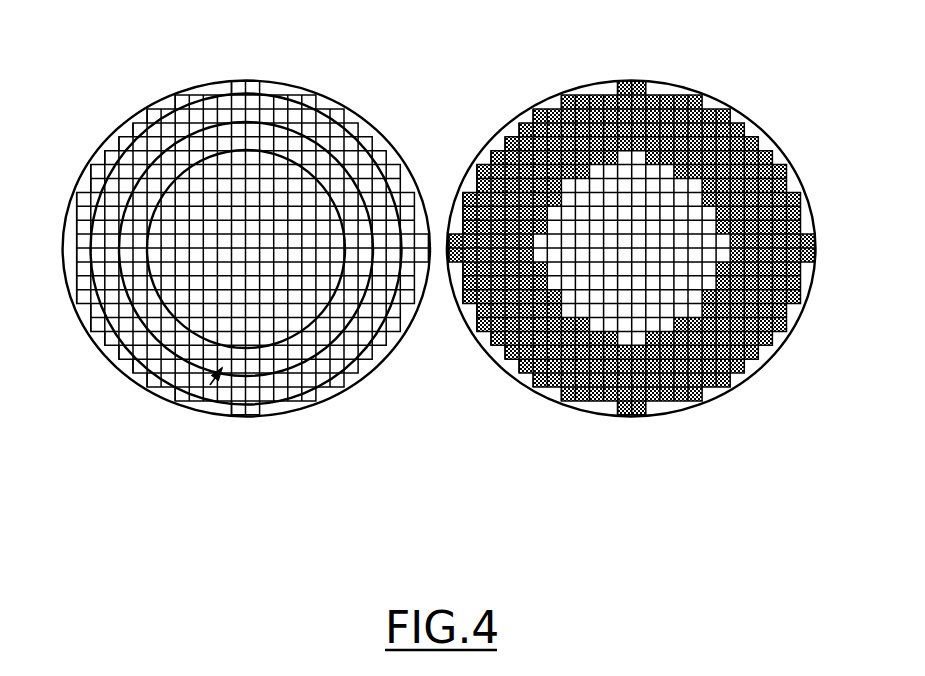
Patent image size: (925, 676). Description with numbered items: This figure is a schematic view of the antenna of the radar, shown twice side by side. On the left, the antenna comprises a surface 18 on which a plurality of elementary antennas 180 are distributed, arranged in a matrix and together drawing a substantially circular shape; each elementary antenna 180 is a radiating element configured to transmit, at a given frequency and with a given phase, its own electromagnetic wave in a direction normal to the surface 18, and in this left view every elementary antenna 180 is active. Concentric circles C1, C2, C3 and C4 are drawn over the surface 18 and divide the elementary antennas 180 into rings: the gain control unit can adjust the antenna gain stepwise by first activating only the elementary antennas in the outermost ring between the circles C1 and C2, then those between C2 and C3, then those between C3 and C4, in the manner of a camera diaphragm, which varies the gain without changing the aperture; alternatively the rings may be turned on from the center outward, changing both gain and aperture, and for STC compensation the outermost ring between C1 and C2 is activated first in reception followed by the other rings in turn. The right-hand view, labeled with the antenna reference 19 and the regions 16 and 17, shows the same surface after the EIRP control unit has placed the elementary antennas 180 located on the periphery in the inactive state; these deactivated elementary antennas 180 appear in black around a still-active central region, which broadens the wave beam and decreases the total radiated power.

The surface 18 is at (224, 264).
The second substrate with grid pattern and shaded regions 19 is at (663, 250).
The peripheral shaded region 16 is at (812, 259).
The central unshaded region 17 is at (638, 314).
The elementary antenna 180 is at (210, 385).
The circle C1 is at (118, 120).
The circle C2 is at (281, 411).
The circle C3 is at (122, 296).
The circle C4 is at (322, 174).